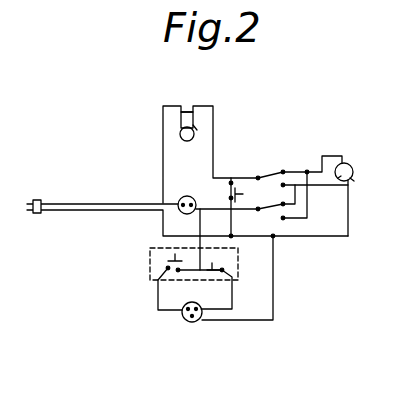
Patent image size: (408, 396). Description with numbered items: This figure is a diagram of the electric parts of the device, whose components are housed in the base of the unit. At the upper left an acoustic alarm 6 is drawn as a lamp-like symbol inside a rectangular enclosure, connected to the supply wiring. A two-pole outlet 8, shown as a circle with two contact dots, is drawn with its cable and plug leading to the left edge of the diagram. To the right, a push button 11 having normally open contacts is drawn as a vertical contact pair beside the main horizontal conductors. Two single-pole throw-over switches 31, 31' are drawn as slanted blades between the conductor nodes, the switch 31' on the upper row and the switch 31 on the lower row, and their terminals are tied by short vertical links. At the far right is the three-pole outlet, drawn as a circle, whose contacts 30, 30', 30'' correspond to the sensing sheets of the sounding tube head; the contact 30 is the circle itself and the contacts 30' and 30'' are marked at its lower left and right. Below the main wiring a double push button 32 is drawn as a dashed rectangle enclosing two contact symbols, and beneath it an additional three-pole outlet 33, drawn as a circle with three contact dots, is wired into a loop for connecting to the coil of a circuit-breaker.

The acoustic alarm 6 is at (193, 120).
The two-pole outlet 8 is at (180, 210).
The push button 11 is at (235, 180).
The single-pole throw-over switch 31' is at (289, 155).
The single-pole throw-over switch 31 is at (283, 241).
The contact of three-pole outlet 30 is at (360, 156).
The contact of three-pole outlet 30' is at (326, 201).
The contact of three-pole outlet 30'' is at (374, 187).
The double push button 32 is at (148, 265).
The additional three-pole outlet 33 is at (185, 318).